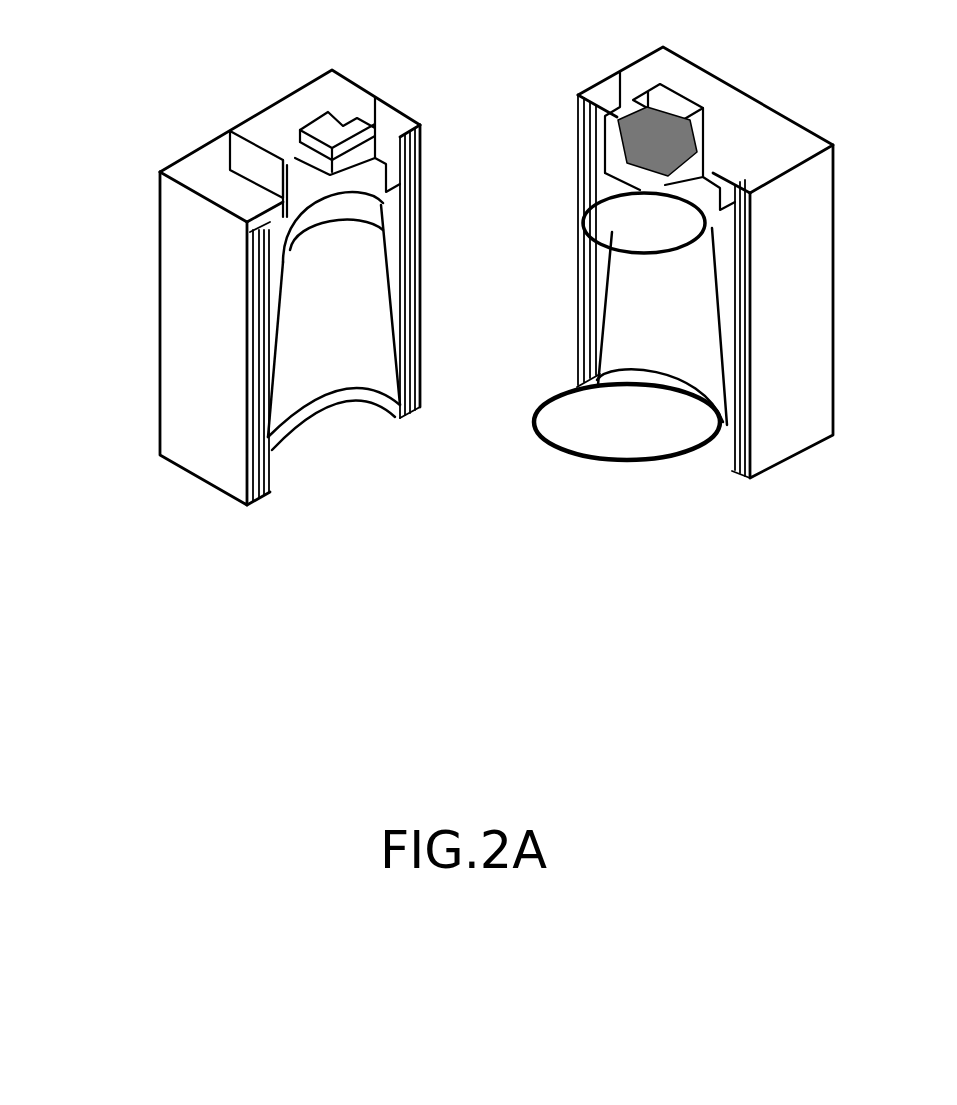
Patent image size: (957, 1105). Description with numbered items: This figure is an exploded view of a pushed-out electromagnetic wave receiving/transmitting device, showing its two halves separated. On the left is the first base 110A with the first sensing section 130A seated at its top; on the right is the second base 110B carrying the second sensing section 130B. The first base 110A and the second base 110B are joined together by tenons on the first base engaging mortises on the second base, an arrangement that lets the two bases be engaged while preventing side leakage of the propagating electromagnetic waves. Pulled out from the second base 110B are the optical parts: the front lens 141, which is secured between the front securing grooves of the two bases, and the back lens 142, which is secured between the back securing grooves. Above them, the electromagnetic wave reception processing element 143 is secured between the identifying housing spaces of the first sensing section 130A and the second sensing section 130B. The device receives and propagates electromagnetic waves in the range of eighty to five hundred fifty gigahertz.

The first base 110A is at (246, 272).
The second base 110B is at (640, 254).
The first sensing section 130A is at (257, 110).
The second sensing section 130B is at (601, 120).
The front lens 141 is at (548, 453).
The back lens 142 is at (632, 268).
The electromagnetic wave reception processing element 143 is at (622, 145).